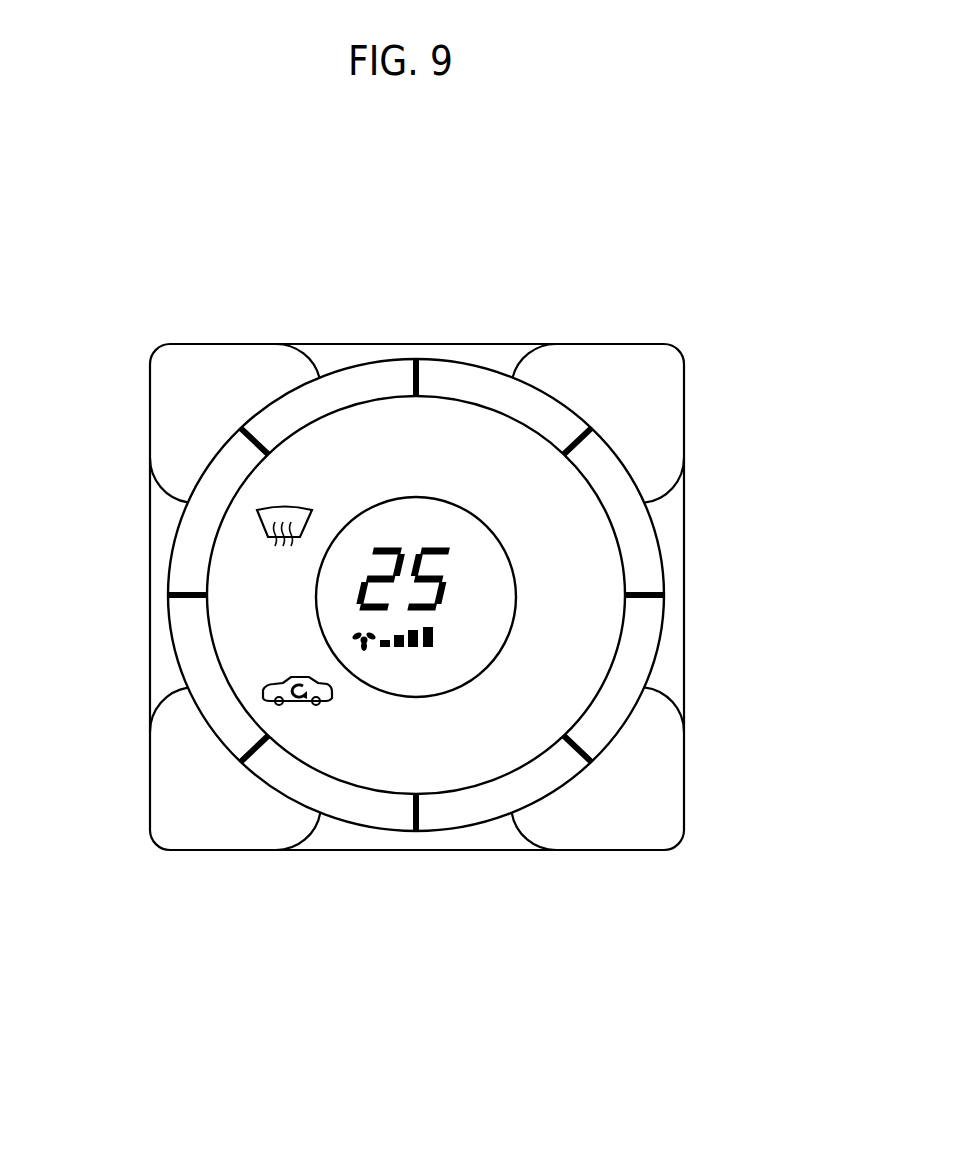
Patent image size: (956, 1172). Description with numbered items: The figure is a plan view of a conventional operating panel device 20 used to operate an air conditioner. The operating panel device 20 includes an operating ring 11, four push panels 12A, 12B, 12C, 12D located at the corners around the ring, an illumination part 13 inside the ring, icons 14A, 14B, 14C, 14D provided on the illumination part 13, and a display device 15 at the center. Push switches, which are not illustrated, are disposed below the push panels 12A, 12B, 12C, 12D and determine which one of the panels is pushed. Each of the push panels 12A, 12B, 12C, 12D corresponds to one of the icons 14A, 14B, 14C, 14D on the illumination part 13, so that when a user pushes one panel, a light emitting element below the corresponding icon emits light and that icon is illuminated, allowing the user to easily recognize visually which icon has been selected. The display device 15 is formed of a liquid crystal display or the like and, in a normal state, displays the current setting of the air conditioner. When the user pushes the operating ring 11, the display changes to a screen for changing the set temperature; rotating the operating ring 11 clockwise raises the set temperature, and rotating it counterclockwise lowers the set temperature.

The operating panel device 20 is at (537, 259).
The operating ring 11 is at (370, 380).
The push panel 12A is at (188, 385).
The push panel 12B is at (175, 817).
The push panel 12C is at (633, 817).
The push panel 12D is at (643, 390).
The illumination part 13 is at (548, 598).
The icon 14A is at (283, 478).
The icon 14B is at (305, 705).
The icon 14C is at (535, 710).
The icon 14D is at (546, 478).
The display device 15 is at (408, 662).